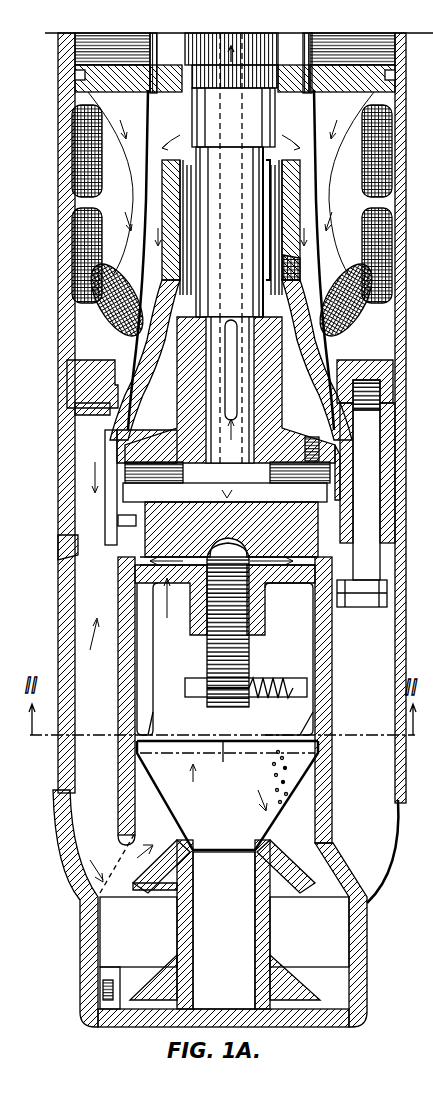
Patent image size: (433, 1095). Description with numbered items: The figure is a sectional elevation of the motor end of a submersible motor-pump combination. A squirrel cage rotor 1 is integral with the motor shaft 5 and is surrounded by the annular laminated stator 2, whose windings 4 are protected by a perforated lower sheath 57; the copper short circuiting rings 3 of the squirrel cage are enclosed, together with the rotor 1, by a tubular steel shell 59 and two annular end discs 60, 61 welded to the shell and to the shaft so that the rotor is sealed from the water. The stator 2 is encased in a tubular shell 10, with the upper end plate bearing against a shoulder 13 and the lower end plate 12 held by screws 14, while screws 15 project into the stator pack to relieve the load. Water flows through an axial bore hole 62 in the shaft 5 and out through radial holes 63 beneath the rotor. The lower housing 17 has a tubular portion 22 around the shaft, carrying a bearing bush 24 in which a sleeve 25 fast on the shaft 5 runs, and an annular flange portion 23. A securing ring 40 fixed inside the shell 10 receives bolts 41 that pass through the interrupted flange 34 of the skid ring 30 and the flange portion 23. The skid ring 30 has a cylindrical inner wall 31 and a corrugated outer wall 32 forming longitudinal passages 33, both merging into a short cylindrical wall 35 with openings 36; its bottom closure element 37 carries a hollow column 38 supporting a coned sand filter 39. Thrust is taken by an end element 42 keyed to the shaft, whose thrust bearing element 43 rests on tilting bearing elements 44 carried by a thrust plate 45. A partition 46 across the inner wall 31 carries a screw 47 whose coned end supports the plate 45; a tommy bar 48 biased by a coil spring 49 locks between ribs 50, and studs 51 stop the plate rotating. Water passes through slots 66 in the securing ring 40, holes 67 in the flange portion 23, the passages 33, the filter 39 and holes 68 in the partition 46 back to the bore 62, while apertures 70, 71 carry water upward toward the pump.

The rotor 1 is at (200, 45).
The stator 2 is at (332, 48).
The short circuiting rings 3 is at (165, 46).
The windings of the stator 4 is at (72, 130).
The shaft 5 is at (265, 277).
The tubular shell 10 is at (63, 108).
The end plate 12 is at (130, 46).
The shoulder 13 is at (432, 675).
The screws 14 is at (68, 80).
The screws 15 is at (430, 815).
The lower housing 17 is at (170, 406).
The tubular portion 22 is at (302, 265).
The annular flange portion 23 is at (105, 507).
The bearing bush 24 is at (185, 190).
The sleeve 25 is at (278, 206).
The skid ring 30 is at (70, 929).
The inner wall 31 is at (120, 638).
The outer wall 32 is at (115, 655).
The longitudinal passages 33 is at (65, 787).
The interrupted flange 34 is at (388, 590).
The short cylindrical wall 35 is at (85, 947).
The openings 36 is at (80, 878).
The bottom closure element 37 is at (312, 1022).
The hollow column 38 is at (187, 937).
The coned sand filter 39 is at (290, 803).
The securing ring 40 is at (82, 367).
The bolts 41 is at (360, 483).
The end element 42 is at (123, 445).
The end thrust bearing element 43 is at (125, 473).
The stationary bearing elements 44 is at (140, 507).
The thrust plate 45 is at (140, 590).
The horizontal partition 46 is at (284, 590).
The screw 47 is at (207, 652).
The tommy bar 48 is at (325, 683).
The coil spring 49 is at (268, 678).
The longitudinal ribs 50 is at (153, 722).
The studs 51 is at (135, 568).
The lower sheath 57 is at (318, 210).
The tubular steel shell 59 is at (286, 40).
The annular end disc 60 is at (300, 190).
The annular end disc 61 is at (273, 135).
The axial bore hole 62 is at (236, 40).
The radial holes 63 is at (240, 260).
The slots 66 is at (74, 425).
The holes 67 is at (118, 521).
The holes 68 is at (150, 598).
The apertures 70 is at (383, 418).
The apertures 71 is at (383, 396).